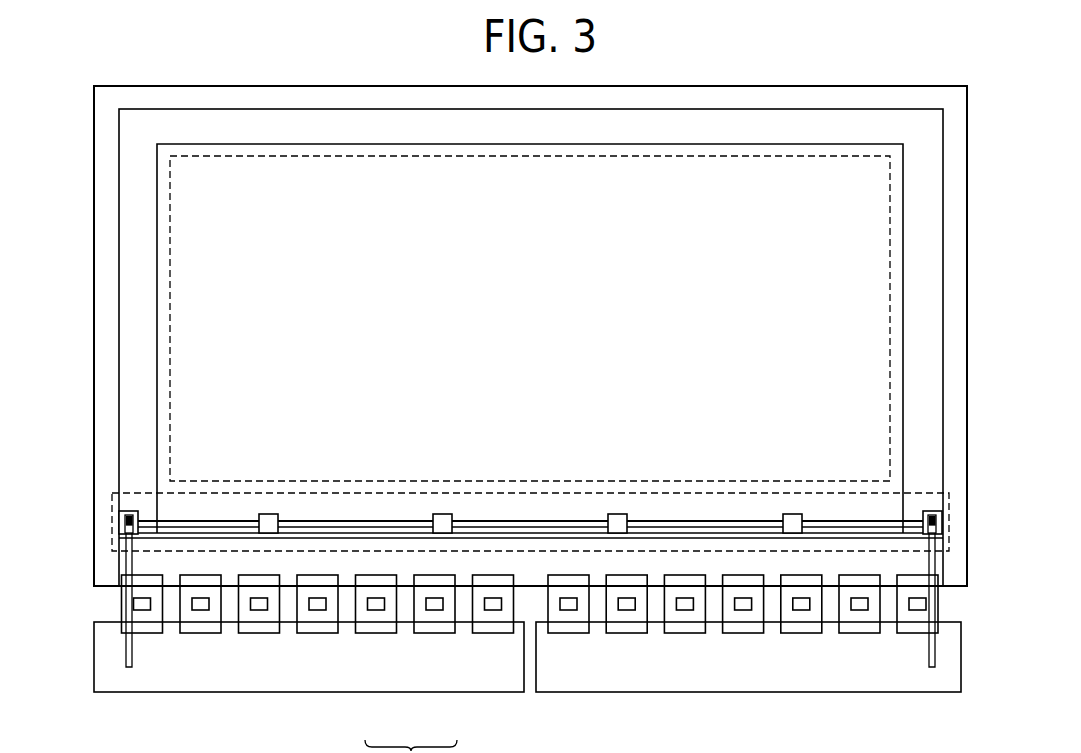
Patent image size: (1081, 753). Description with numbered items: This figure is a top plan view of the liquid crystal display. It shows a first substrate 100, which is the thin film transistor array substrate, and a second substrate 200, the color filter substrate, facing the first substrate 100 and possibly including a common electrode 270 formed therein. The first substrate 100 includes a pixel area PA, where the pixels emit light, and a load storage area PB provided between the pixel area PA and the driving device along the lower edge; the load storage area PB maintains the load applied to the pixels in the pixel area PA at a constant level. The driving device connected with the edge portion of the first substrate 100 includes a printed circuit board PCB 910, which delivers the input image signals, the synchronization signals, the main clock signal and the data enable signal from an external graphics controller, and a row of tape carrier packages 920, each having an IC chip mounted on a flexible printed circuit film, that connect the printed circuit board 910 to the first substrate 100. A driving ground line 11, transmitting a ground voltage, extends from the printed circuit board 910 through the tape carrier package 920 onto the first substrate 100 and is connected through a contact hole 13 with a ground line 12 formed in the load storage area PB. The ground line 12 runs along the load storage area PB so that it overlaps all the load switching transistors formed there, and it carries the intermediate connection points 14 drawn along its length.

The first substrate 100 is at (967, 186).
The second substrate 200 is at (943, 247).
The common electrode 270 is at (904, 312).
The pixel area PA is at (890, 392).
The load storage area PB is at (949, 522).
The ground line 12 is at (185, 520).
The contact hole 13 is at (126, 528).
The connection pad 14 is at (268, 533).
The driving ground line 11 is at (132, 648).
The printed circuit board 910 is at (366, 692).
The tape carrier package 920 is at (437, 633).
The printed circuit board PCB is at (309, 666).